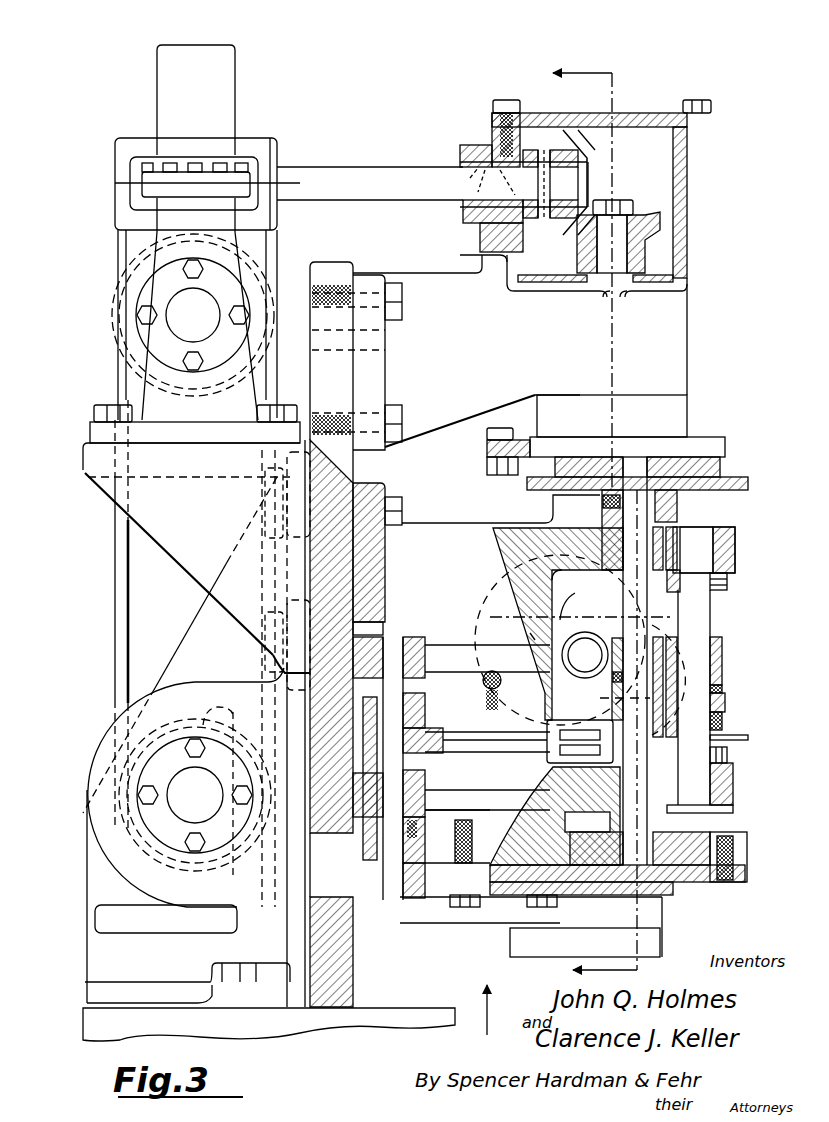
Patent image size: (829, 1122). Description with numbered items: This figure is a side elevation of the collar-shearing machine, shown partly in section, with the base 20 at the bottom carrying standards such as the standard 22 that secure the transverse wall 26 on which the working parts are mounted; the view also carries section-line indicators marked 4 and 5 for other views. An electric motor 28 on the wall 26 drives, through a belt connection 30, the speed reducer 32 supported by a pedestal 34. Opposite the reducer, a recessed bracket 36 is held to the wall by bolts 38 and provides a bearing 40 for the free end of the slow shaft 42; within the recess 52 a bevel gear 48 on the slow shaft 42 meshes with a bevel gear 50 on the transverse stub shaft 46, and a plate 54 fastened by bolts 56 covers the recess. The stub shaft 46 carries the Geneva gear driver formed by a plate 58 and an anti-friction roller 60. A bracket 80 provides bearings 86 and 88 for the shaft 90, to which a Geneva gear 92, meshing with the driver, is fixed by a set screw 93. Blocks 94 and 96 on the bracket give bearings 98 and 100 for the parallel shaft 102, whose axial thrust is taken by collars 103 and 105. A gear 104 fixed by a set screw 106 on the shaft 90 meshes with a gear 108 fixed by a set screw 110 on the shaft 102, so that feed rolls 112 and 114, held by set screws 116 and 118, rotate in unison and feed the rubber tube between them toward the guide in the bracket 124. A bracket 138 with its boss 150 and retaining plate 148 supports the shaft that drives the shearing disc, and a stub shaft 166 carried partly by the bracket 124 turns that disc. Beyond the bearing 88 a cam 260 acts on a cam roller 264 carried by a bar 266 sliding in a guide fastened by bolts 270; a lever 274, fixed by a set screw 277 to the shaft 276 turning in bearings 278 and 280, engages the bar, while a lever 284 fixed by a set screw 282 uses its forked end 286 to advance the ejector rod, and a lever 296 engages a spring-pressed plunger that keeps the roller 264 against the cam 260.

The base 20 is at (353, 1023).
The standard 22 is at (88, 960).
The wall 26 is at (345, 1002).
The electric motor 28 is at (100, 840).
The belt connection 30 is at (127, 648).
The speed reducer 32 is at (152, 290).
The pedestal 34 is at (162, 548).
The recessed bracket 36 is at (418, 285).
The bolts 38 is at (402, 410).
The bearing 40 is at (462, 145).
The slow shaft 42 is at (386, 200).
The stub shaft 46 is at (640, 250).
The bevel gear 48 is at (562, 133).
The bevel gear 50 is at (575, 232).
The recess 52 is at (690, 170).
The plate 54 is at (640, 113).
The bolts 56 is at (712, 104).
The plate 58 is at (490, 446).
The anti-friction roller 60 is at (490, 470).
The bracket 80 is at (380, 485).
The bearing 86 is at (682, 562).
The bearing 88 is at (622, 800).
The shaft 90 is at (630, 598).
The Geneva gear 92 is at (745, 478).
The set screw 93 is at (603, 501).
The block 94 is at (735, 530).
The block 96 is at (734, 808).
The bearing 98 is at (737, 548).
The bearing 100 is at (734, 780).
The shaft 102 is at (696, 545).
The collar 103 is at (728, 582).
The gear 104 is at (605, 720).
The collar 105 is at (728, 753).
The set screw 106 is at (610, 738).
The gear 108 is at (726, 700).
The set screw 110 is at (723, 722).
The feed roll 112 is at (600, 628).
The feed roll 114 is at (723, 652).
The set screw 116 is at (500, 685).
The set screw 118 is at (723, 680).
The bracket 124 is at (578, 595).
The bracket 138 is at (492, 912).
The plate 148 is at (661, 955).
The boss 150 is at (655, 931).
The stub shaft 166 is at (530, 633).
The cam 260 is at (690, 868).
The cam roller 264 is at (748, 850).
The bar 266 is at (742, 878).
The bolts 270 is at (548, 907).
The lever 274 is at (413, 900).
The shaft 276 is at (395, 795).
The set screw 277 is at (416, 865).
The bearing 278 is at (418, 650).
The bearing 280 is at (422, 770).
The set screw 282 is at (445, 722).
The lever 284 is at (500, 743).
The forked end 286 is at (560, 745).
The lever 296 is at (418, 712).
The section line 4 is at (578, 528).
The view arrow 5 is at (485, 1024).